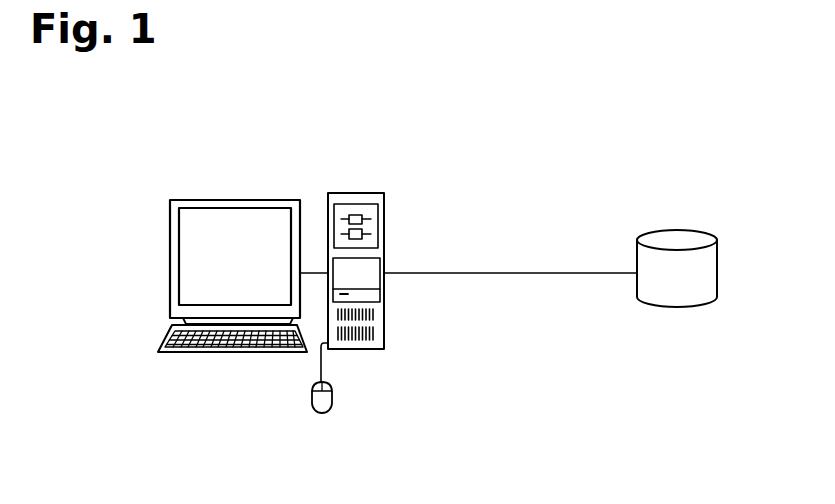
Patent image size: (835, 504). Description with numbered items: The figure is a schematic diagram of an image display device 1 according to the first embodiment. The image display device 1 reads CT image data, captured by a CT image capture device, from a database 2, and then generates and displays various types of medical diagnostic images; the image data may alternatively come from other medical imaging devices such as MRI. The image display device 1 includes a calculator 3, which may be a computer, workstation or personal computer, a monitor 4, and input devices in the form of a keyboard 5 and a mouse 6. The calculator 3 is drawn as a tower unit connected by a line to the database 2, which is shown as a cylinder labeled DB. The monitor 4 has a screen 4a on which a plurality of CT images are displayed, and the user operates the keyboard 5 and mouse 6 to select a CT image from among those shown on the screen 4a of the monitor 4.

The image display device 1 is at (358, 192).
The database 2 is at (718, 272).
The calculator 3 is at (385, 224).
The monitor 4 is at (170, 249).
The screen 4a is at (232, 216).
The keyboard 5 is at (230, 352).
The mouse 6 is at (333, 393).